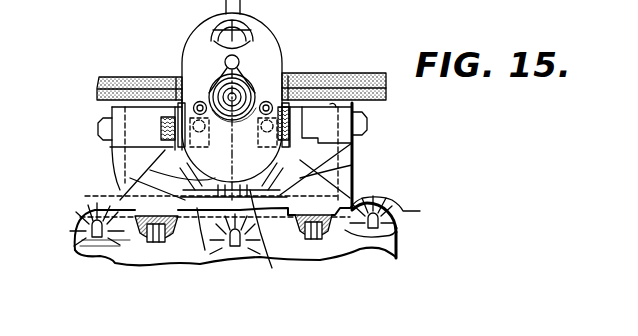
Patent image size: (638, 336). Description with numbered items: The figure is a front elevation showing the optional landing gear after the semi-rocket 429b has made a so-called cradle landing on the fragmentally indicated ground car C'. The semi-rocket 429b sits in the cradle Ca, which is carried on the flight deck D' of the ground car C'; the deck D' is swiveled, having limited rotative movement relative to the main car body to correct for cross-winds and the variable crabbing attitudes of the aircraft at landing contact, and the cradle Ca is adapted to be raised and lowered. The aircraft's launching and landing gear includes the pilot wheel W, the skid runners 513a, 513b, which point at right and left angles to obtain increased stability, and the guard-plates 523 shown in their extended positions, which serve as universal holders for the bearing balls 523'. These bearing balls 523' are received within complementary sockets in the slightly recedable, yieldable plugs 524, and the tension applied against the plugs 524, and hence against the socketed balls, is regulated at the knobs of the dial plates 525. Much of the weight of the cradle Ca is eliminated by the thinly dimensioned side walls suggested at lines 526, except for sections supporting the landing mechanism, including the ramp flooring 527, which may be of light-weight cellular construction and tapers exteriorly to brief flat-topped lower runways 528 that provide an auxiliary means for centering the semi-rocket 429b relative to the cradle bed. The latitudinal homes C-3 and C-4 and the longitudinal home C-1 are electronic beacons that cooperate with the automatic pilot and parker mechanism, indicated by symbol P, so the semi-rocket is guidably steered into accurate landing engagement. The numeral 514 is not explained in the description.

The stem 514 is at (326, 7).
The semi-rocket 429b is at (313, 11).
The automatic pilot and parker mechanism P is at (240, 61).
The pilot wheel W is at (233, 144).
The recedable plug 524 is at (130, 80).
The bearing ball 523' is at (236, 68).
The side wall line 526 is at (112, 108).
The dial plate 525 is at (110, 118).
The guard-plate 523 is at (226, 128).
The skid runner 513a is at (160, 167).
The skid runner 513b is at (353, 156).
The ramp flooring 527 is at (205, 196).
The cradle Ca is at (355, 186).
The flight deck D' is at (395, 217).
The latitudinal home C-4 is at (400, 240).
The ground car C' is at (272, 260).
The latitudinal home C-3 is at (87, 230).
The longitudinal home C-1 is at (230, 246).
The lower runway 528 is at (200, 205).